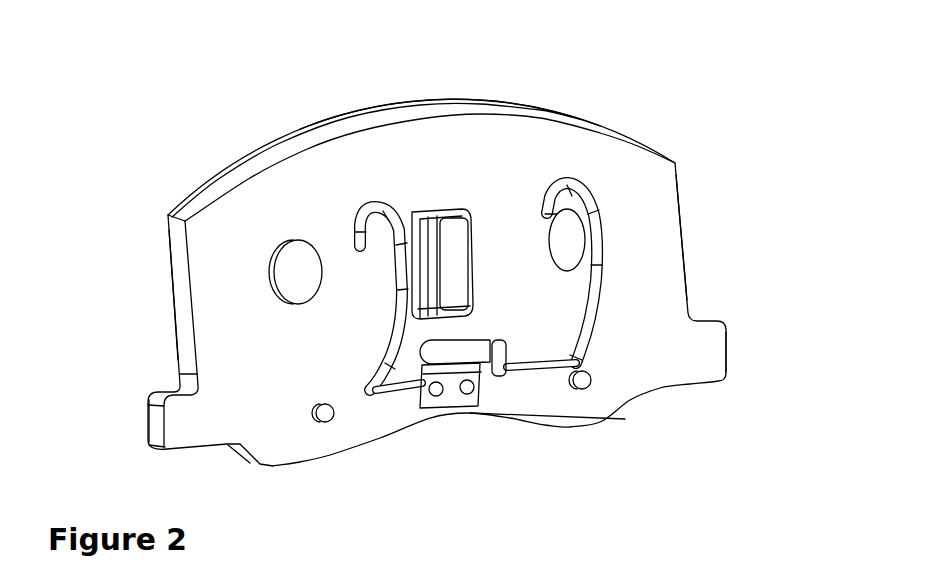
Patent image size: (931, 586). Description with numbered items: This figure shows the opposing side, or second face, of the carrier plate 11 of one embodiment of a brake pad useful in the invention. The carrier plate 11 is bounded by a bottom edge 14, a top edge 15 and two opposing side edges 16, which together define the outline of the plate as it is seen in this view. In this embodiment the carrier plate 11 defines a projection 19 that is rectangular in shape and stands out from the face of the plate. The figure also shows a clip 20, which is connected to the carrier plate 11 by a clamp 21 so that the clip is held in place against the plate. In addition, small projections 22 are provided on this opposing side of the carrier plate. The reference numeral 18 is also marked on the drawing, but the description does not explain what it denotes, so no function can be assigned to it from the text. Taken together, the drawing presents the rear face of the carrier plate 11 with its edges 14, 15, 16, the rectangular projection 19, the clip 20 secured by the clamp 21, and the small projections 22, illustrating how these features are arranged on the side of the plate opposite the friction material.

The carrier plate 11 is at (702, 137).
The bottom edge 14 is at (463, 417).
The top edge 15 is at (443, 97).
The side edges 16 is at (175, 266).
The lug 18 is at (137, 425).
The projection 19 is at (452, 233).
The clip 20 is at (590, 330).
The clamp 21 is at (440, 353).
The small projections 22 is at (327, 418).